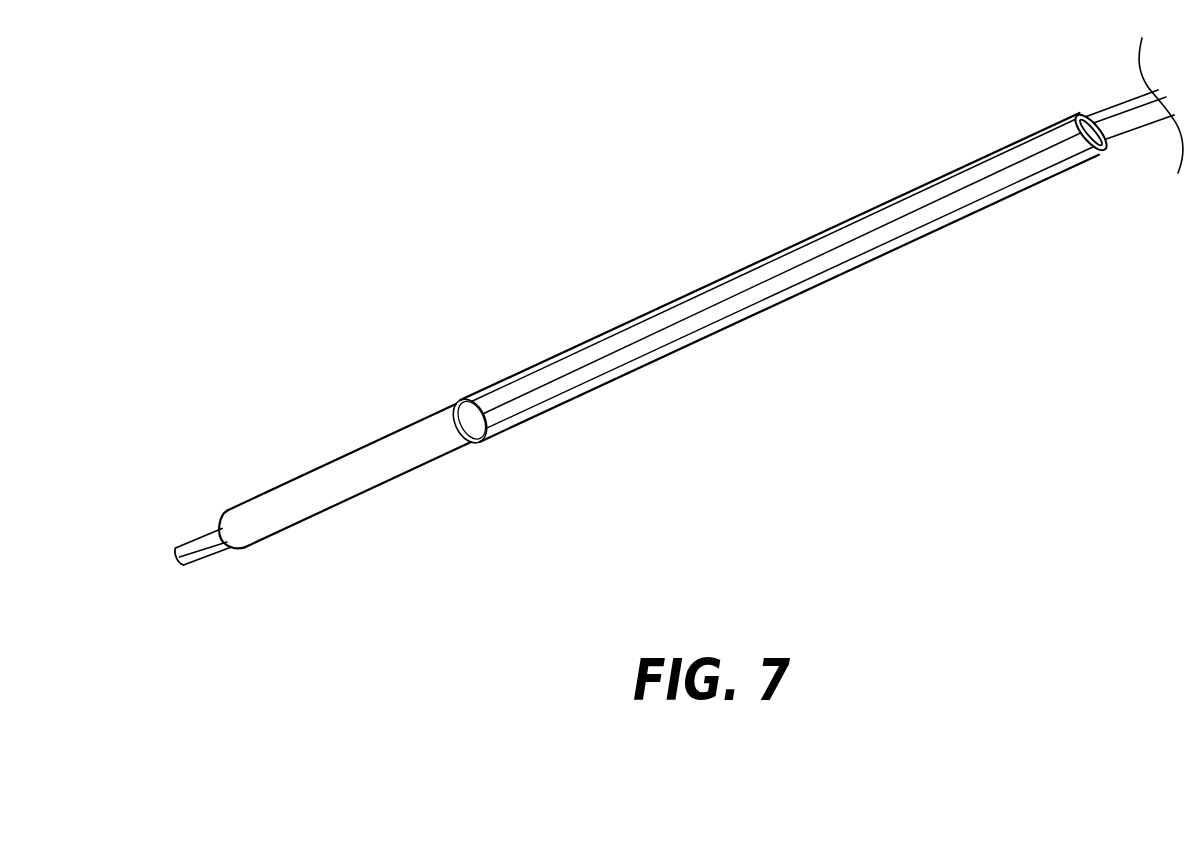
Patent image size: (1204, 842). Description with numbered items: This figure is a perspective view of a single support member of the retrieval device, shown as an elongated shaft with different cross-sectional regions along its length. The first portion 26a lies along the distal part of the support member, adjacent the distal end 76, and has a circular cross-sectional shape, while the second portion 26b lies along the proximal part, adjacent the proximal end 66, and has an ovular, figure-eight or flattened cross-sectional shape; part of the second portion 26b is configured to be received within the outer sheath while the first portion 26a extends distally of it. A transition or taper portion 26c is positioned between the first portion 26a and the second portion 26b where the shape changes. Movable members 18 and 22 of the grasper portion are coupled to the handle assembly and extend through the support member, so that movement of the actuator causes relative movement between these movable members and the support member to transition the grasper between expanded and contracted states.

The movable member 18 is at (1109, 141).
The movable member 22 is at (1126, 103).
The first portion of the first support member 26a is at (356, 491).
The second portion of the first support member 26b is at (877, 258).
The transition or taper portion 26c is at (484, 440).
The proximal end of the first support member 66 is at (1067, 184).
The distal end of the first support member 76 is at (196, 515).